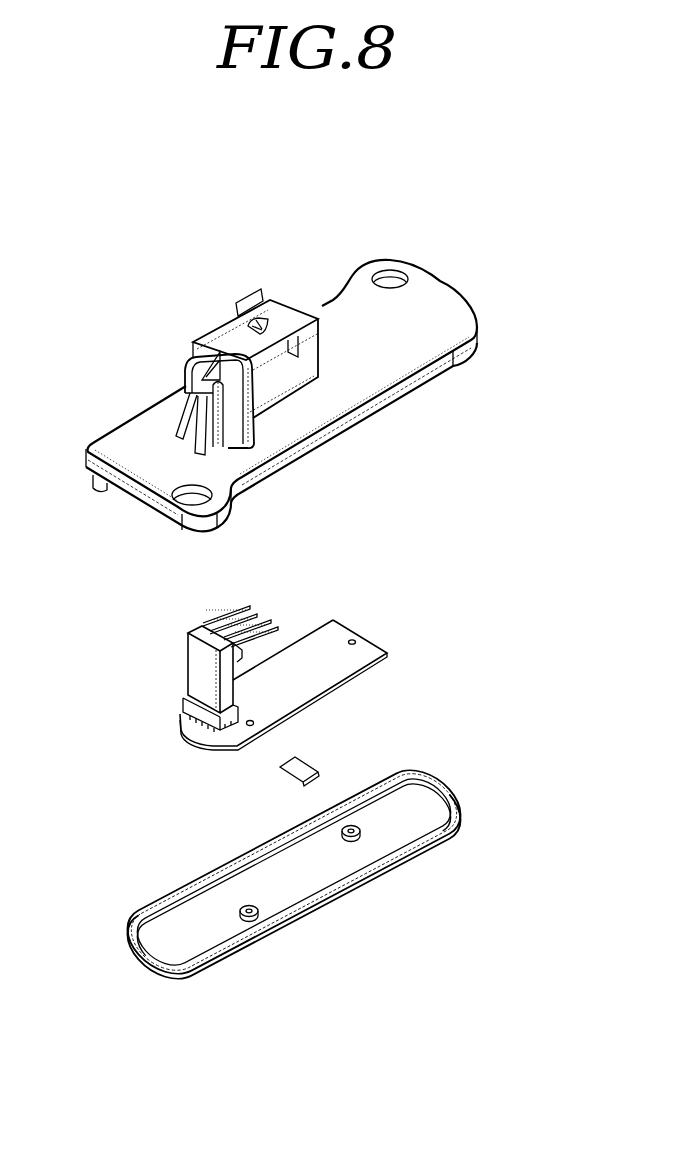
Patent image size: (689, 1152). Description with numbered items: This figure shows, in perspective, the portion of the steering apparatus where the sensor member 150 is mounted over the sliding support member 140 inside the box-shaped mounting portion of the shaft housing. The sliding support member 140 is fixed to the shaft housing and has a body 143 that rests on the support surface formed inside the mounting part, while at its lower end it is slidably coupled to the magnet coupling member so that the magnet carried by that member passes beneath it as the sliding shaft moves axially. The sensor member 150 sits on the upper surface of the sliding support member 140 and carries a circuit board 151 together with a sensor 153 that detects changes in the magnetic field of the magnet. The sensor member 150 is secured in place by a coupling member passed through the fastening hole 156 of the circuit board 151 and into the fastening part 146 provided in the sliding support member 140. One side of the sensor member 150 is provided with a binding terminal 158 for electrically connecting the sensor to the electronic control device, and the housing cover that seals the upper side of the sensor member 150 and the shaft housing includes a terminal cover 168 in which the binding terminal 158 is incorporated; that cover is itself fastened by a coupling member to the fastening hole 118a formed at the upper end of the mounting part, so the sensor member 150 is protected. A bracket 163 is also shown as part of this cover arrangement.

The fastening hole 118a is at (385, 268).
The terminal cover 168 is at (218, 338).
The bracket 163 is at (290, 359).
The sensor member 150 is at (274, 634).
The fastening hole 156 is at (355, 641).
The binding terminal 158 is at (195, 665).
The circuit board 151 is at (337, 672).
The sliding support member 140 is at (296, 841).
The sensor 153 is at (282, 772).
The fastening part 146 is at (356, 841).
The body 143 is at (130, 936).